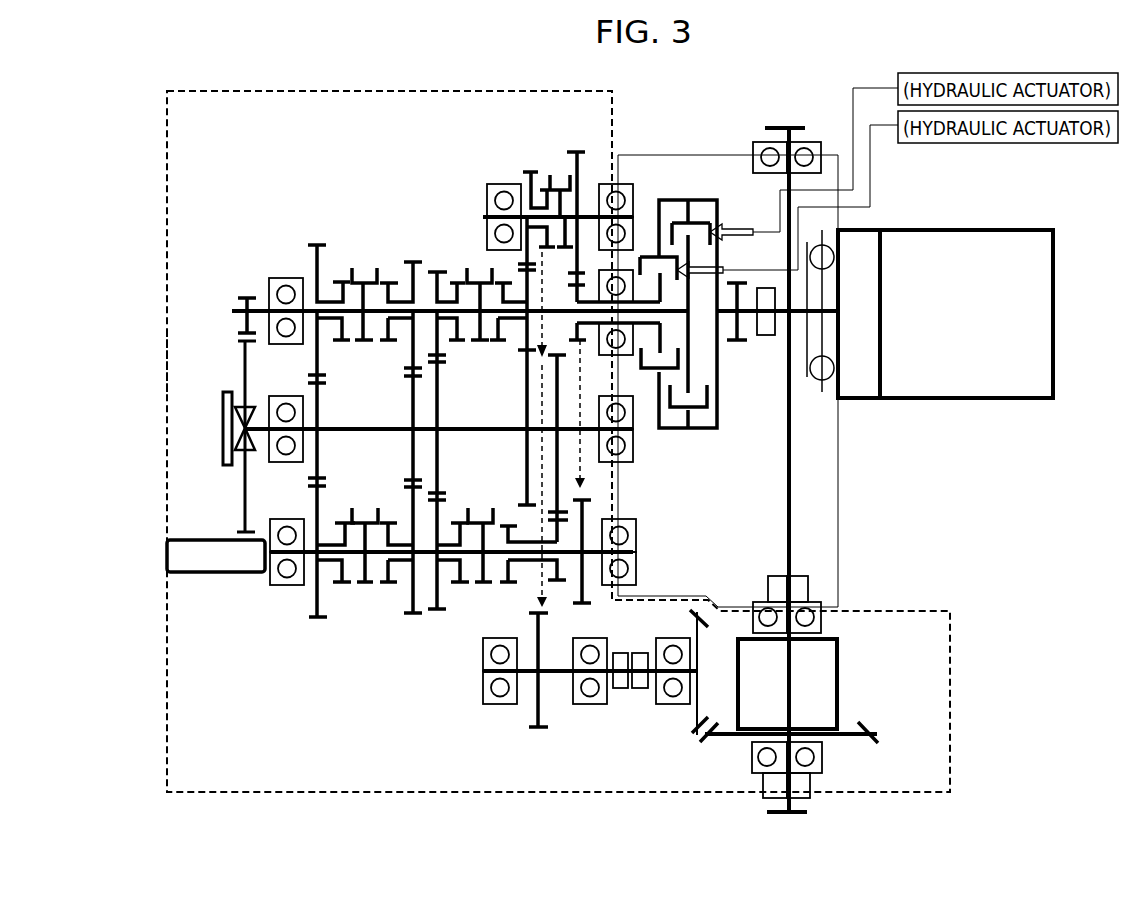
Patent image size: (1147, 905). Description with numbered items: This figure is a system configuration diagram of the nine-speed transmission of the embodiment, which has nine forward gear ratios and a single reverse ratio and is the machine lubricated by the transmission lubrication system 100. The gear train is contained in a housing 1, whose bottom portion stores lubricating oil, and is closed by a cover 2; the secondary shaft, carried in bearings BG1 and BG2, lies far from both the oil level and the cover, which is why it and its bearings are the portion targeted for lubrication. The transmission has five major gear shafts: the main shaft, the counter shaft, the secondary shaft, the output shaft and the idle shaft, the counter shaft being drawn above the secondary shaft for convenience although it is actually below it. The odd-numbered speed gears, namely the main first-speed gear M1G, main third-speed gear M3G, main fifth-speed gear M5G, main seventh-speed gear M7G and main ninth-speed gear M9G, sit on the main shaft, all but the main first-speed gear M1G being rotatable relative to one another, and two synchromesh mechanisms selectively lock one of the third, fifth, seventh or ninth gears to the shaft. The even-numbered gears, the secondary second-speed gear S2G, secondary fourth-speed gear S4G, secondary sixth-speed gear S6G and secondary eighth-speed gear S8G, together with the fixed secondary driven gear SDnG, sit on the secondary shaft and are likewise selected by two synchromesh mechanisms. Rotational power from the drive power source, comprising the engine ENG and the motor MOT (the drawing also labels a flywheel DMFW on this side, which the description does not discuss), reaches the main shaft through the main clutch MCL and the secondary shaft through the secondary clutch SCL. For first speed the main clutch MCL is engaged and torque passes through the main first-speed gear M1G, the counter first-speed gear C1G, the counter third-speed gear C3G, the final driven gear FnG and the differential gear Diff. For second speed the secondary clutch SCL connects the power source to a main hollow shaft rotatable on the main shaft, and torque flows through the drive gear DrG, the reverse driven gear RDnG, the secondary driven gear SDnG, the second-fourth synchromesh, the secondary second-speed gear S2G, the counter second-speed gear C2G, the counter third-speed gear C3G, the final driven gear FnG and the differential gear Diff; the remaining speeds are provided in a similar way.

The housing 1 is at (418, 81).
The cover 2 is at (158, 364).
The transmission lubrication system 100 is at (219, 582).
The bearing BG1 is at (288, 586).
The bearing BG2 is at (619, 519).
The main first-speed gear M1G is at (249, 297).
The main third-speed gear M3G is at (503, 280).
The main fifth-speed gear M5G is at (436, 270).
The main seventh-speed gear M7G is at (410, 262).
The main ninth-speed gear M9G is at (315, 252).
The counter first-speed gear C1G is at (241, 363).
The counter second-speed gear C2G is at (583, 333).
The counter third-speed gear C3G is at (526, 398).
The secondary second-speed gear S2G is at (558, 582).
The secondary fourth-speed gear S4G is at (440, 598).
The secondary sixth-speed gear S6G is at (410, 598).
The secondary eighth-speed gear S8G is at (320, 598).
The reverse driven gear RDnG is at (578, 168).
The drive gear DrG is at (583, 293).
The secondary driven gear SDnG is at (590, 592).
The final driven gear FnG is at (537, 632).
The secondary clutch SCL is at (680, 355).
The main clutch MCL is at (708, 398).
The differential gear Diff is at (838, 670).
The dual mass flywheel DMFW is at (822, 382).
The motor MOT is at (866, 230).
The engine ENG is at (983, 229).